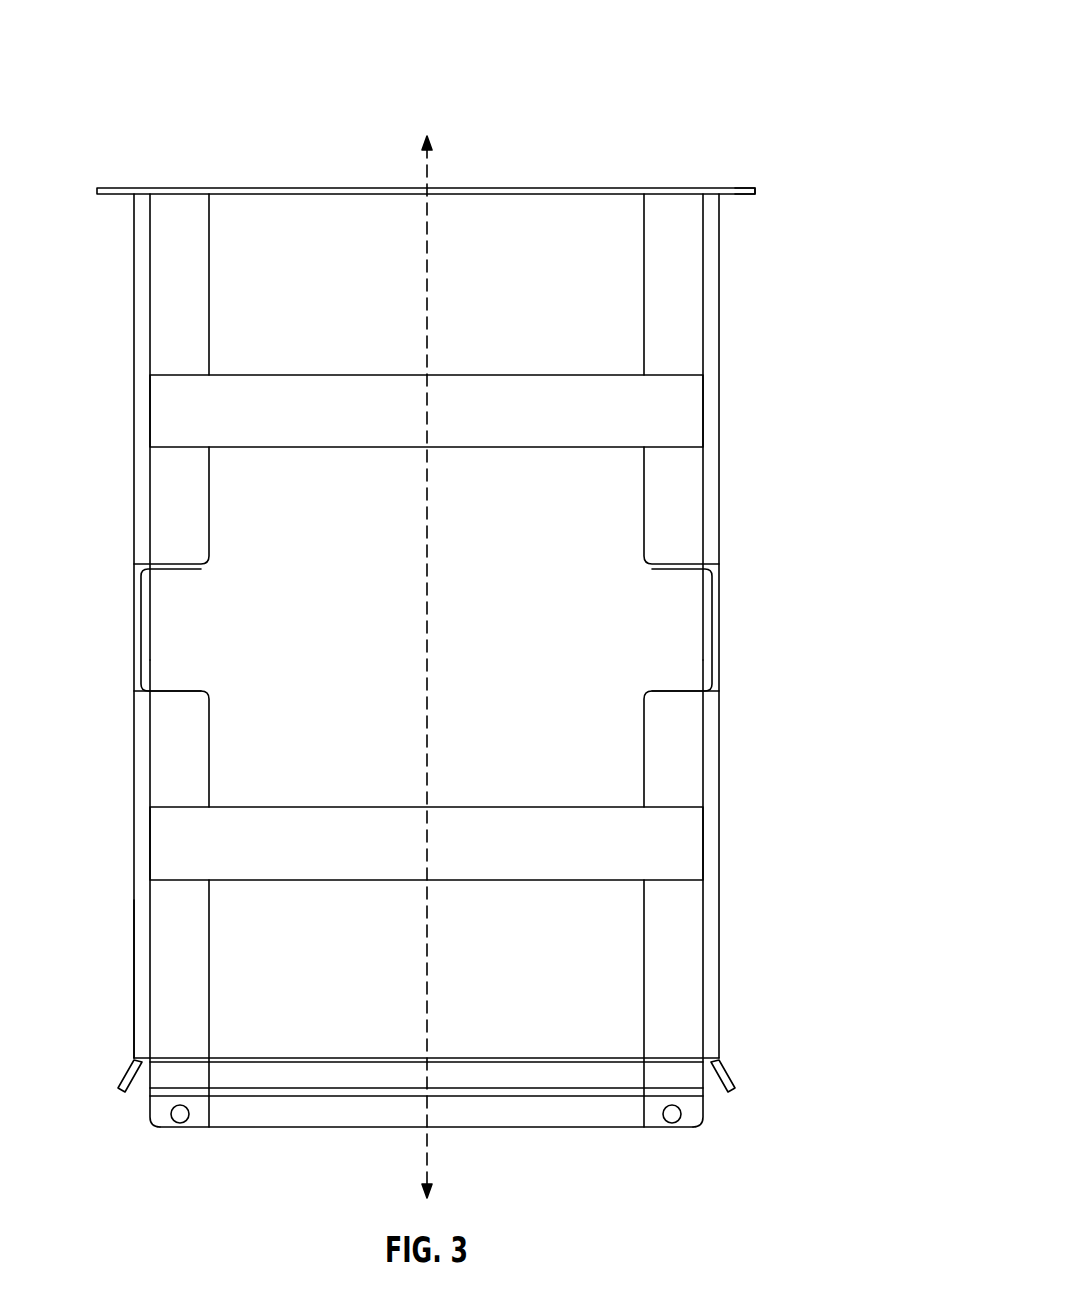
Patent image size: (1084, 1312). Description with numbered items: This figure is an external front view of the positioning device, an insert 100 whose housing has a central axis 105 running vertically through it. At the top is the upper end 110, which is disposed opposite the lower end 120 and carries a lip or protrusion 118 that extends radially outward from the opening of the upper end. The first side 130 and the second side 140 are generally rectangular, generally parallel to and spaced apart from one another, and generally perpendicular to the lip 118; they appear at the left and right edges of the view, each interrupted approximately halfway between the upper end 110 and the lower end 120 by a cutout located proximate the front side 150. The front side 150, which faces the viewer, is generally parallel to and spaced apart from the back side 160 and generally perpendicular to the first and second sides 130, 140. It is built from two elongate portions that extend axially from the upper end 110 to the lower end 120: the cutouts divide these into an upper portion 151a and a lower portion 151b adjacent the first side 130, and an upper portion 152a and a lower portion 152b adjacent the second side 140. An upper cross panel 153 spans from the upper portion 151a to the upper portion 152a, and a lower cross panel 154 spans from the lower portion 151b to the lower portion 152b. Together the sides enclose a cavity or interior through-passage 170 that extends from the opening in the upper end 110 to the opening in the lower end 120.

The insert 100 is at (664, 44).
The central axis 105 is at (430, 182).
The upper end 110 is at (242, 186).
The lip or protrusion 118 is at (727, 187).
The lower end 120 is at (734, 1067).
The first side 130 is at (132, 536).
The second side 140 is at (722, 343).
The front side 150 is at (684, 258).
The upper portion of the first elongate portion 151a is at (158, 312).
The lower portion of the first elongate portion 151b is at (155, 750).
The upper portion of the second elongate portion 152a is at (696, 526).
The lower portion of the second elongate portion 152b is at (696, 751).
The upper cross panel 153 is at (694, 428).
The lower cross panel 154 is at (696, 848).
The back side 160 is at (132, 980).
The cavity or interior through-passage 170 is at (244, 284).